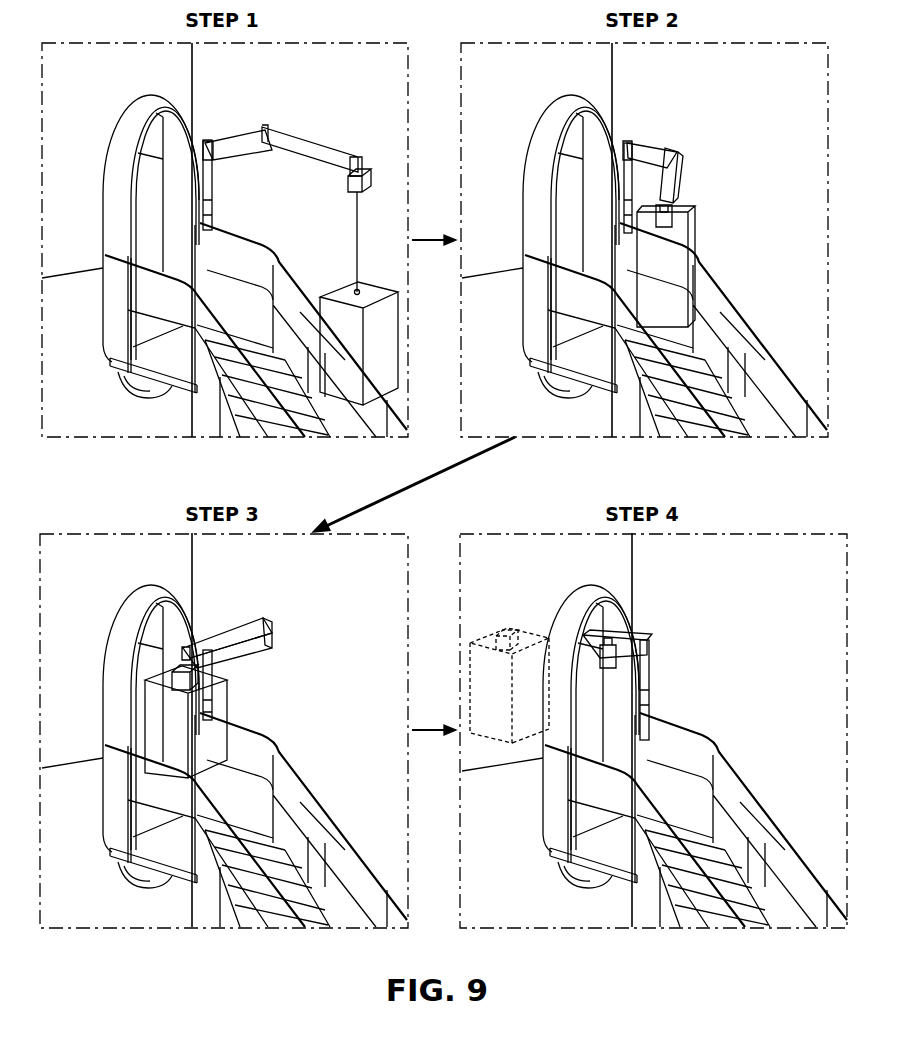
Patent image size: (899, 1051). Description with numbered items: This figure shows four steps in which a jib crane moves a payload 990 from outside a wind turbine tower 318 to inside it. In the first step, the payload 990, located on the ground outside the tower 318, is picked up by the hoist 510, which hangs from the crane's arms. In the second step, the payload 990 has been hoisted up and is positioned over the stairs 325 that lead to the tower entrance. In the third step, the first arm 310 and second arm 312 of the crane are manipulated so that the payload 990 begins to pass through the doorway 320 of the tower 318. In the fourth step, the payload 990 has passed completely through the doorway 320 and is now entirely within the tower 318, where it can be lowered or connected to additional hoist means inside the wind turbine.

The first arm 310 is at (296, 133).
The second arm 312 is at (237, 138).
The tower 318 is at (74, 99).
The doorway 320 is at (125, 157).
The stairs 325 is at (283, 398).
The hoist 510 is at (347, 182).
The payload 990 is at (339, 313).